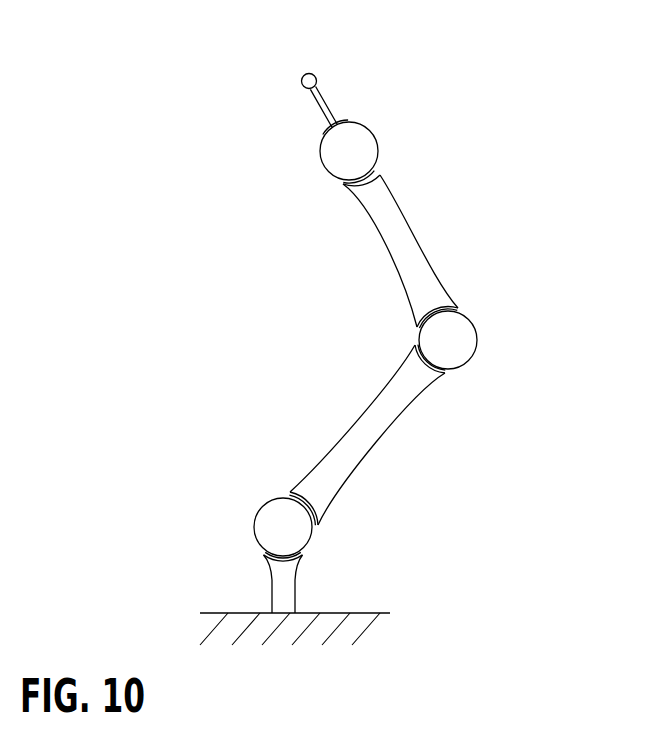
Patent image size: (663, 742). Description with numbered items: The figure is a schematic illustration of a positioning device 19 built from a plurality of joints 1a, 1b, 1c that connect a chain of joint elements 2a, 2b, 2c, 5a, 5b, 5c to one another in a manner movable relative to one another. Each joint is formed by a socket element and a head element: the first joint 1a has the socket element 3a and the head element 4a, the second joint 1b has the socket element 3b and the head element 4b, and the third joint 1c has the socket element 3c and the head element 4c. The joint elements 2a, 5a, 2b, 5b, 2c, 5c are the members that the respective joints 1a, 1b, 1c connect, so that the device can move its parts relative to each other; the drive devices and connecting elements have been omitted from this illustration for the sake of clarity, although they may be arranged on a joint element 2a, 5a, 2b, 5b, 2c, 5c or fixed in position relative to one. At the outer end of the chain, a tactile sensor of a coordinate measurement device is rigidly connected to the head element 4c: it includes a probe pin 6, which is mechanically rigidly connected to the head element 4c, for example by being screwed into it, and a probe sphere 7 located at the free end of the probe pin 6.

The positioning device 19 is at (207, 370).
The joint 1a is at (248, 527).
The joint 1b is at (485, 338).
The joint 1c is at (390, 138).
The joint element 2a is at (287, 590).
The joint element 2b is at (360, 443).
The joint element 2c is at (390, 240).
The socket element 3a is at (283, 567).
The socket element 3b is at (433, 386).
The socket element 3c is at (366, 192).
The head element 4a is at (288, 533).
The head element 4b is at (452, 329).
The head element 4c is at (336, 153).
The joint element 5a is at (310, 495).
The joint element 5b is at (427, 298).
The joint element 5c is at (330, 110).
The probe pin 6 is at (306, 100).
The probe sphere 7 is at (312, 73).